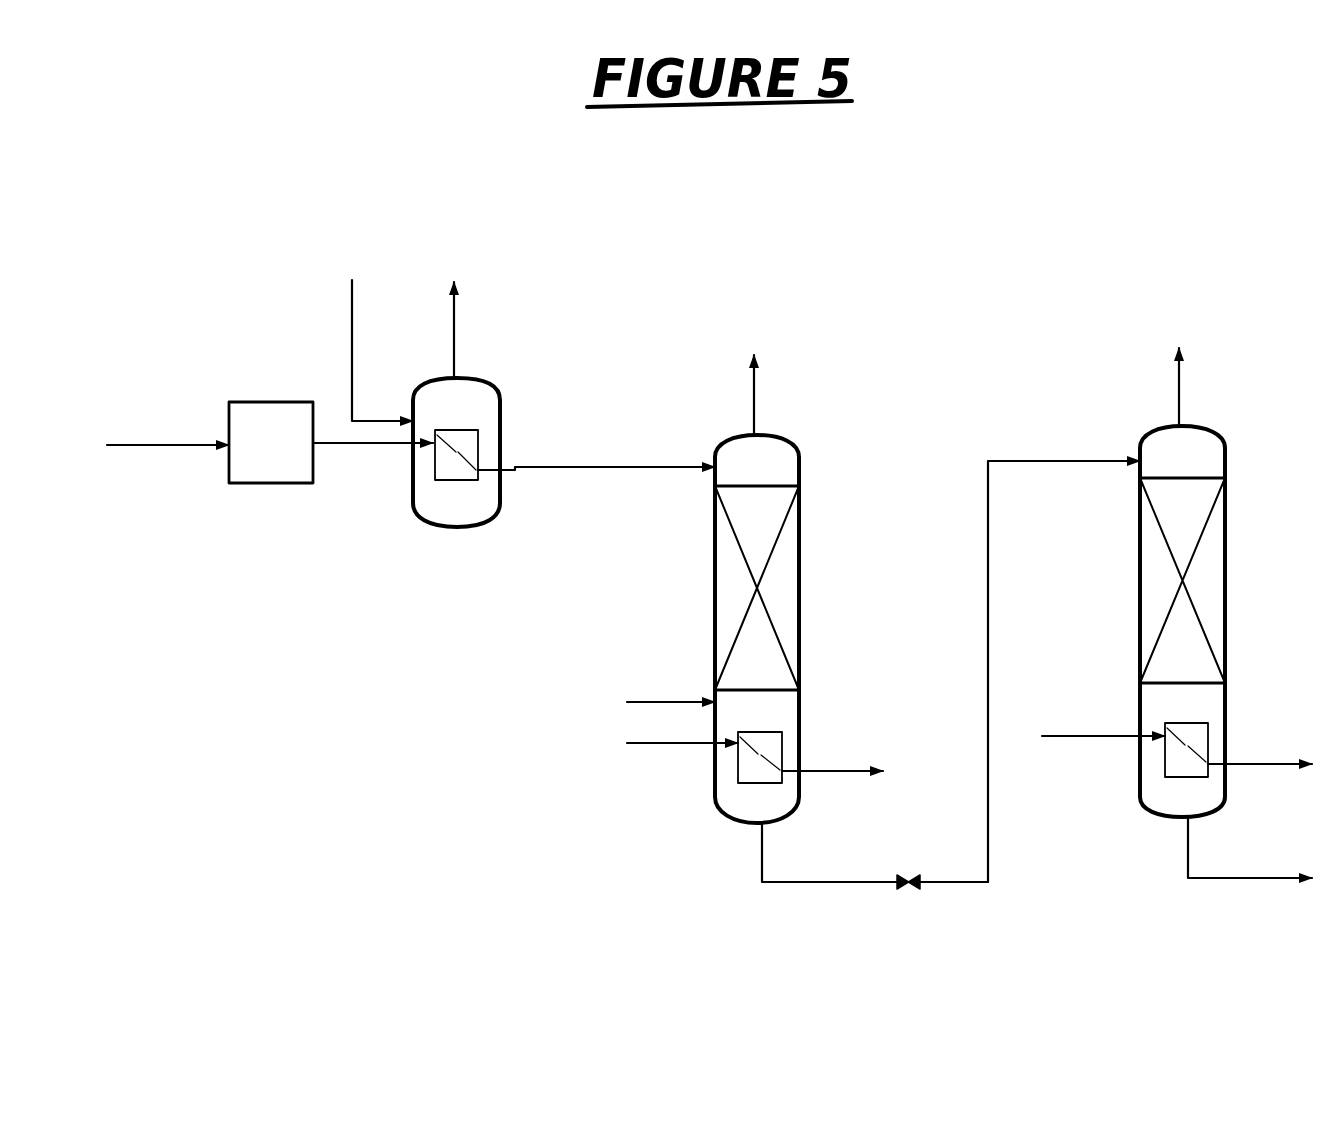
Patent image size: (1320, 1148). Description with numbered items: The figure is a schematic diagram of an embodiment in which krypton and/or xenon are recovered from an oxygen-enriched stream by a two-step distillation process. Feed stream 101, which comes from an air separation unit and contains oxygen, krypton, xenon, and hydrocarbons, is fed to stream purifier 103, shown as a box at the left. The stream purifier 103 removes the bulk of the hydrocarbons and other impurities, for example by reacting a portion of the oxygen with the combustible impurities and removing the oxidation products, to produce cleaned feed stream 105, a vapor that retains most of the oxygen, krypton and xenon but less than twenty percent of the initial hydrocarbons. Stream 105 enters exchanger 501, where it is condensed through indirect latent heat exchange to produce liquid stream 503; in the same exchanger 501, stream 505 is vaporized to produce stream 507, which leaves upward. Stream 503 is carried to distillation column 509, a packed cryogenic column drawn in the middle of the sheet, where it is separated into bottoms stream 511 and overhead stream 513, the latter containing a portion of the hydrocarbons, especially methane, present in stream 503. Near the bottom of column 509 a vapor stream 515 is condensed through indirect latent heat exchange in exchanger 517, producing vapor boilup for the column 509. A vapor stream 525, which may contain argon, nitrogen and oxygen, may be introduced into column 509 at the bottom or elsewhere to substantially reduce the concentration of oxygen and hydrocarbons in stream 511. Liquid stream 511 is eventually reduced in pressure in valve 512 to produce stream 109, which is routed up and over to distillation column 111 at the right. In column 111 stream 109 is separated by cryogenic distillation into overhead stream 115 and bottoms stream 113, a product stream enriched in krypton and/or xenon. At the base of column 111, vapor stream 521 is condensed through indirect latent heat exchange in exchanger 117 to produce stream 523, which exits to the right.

The feed stream 101 is at (177, 442).
The stream purifier 103 is at (289, 399).
The cleaned feed stream 105 is at (340, 449).
The stream 505 is at (386, 314).
The stream 507 is at (488, 334).
The exchanger 501 is at (455, 482).
The stream 503 is at (612, 477).
The distillation column 509 is at (715, 602).
The stream 513 is at (792, 384).
The stream 525 is at (653, 700).
The stream 515 is at (785, 745).
The exchanger 517 is at (842, 780).
The stream 511 is at (855, 886).
The valve 512 is at (906, 892).
The stream 109 is at (1055, 467).
The distillation column 111 is at (1140, 557).
The stream 115 is at (1217, 402).
The stream 521 is at (1058, 742).
The exchanger 117 is at (1174, 778).
The stream 523 is at (1264, 763).
The product stream 113 is at (1270, 884).